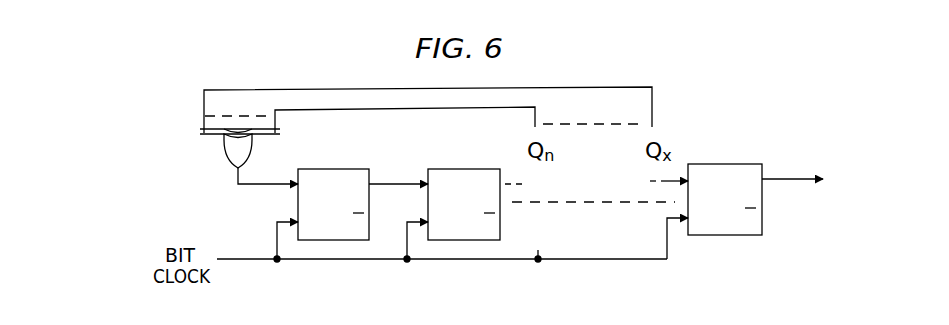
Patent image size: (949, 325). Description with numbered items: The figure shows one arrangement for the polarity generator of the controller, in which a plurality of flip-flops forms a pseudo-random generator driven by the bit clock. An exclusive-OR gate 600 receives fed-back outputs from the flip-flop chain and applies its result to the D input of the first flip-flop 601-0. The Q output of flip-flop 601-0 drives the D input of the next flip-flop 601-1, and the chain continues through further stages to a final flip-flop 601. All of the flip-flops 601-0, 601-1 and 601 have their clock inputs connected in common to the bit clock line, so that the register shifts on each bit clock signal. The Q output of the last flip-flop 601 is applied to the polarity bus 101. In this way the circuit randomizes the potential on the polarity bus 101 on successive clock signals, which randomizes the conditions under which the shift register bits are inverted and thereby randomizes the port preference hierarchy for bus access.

The exclusive-OR gate 600 is at (224, 152).
The flip-flop 601-0 is at (333, 170).
The flip-flop 601-1 is at (462, 169).
The flip-flop 601 is at (722, 164).
The polarity bus 101 is at (836, 178).